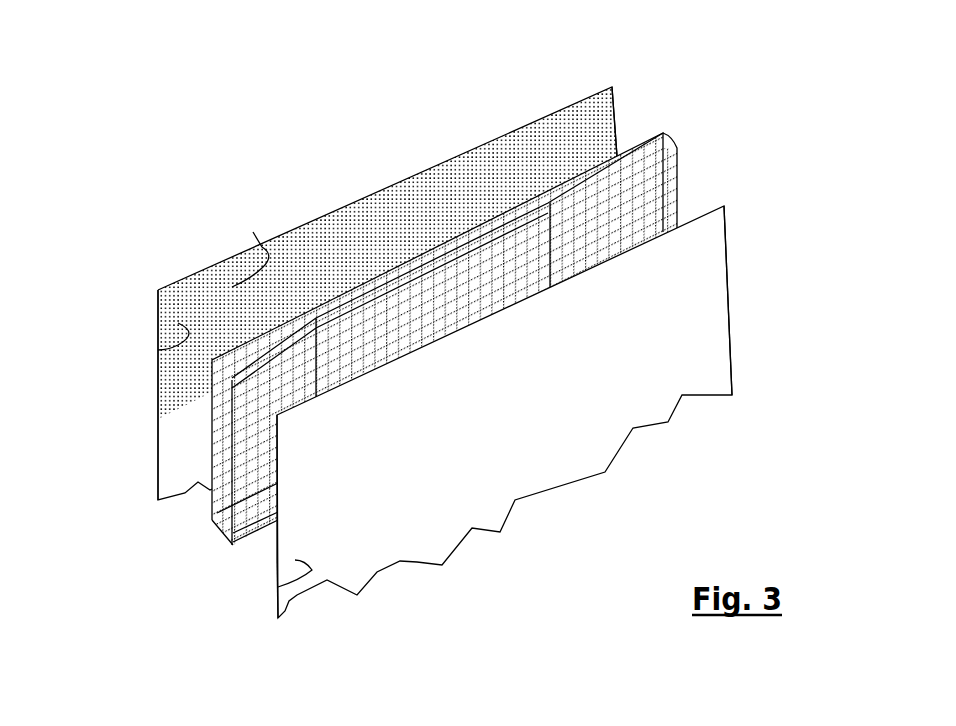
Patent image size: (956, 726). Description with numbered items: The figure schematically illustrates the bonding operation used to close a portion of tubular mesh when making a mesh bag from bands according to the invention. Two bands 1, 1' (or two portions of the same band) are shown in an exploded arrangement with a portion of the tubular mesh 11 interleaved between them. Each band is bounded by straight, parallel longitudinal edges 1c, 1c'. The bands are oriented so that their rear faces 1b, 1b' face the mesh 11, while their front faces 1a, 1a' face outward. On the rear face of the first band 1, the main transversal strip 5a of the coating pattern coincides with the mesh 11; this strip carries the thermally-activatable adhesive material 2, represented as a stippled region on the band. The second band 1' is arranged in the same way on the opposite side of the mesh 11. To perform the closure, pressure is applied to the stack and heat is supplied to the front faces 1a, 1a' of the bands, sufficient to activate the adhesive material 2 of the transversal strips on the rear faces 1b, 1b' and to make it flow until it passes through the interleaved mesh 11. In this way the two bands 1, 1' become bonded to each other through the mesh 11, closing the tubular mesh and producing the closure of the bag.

The band 1 is at (422, 281).
The front face 1a is at (124, 320).
The rear face 1b is at (115, 369).
The longitudinal edges 1c is at (399, 297).
The thermally-activatable adhesive material 2 is at (372, 262).
The main transversal strip 5a is at (242, 246).
The tubular mesh 11 is at (712, 188).
The band 1' is at (548, 412).
The front face 1a' is at (252, 509).
The rear face 1b' is at (228, 525).
The longitudinal edges 1c' is at (515, 437).